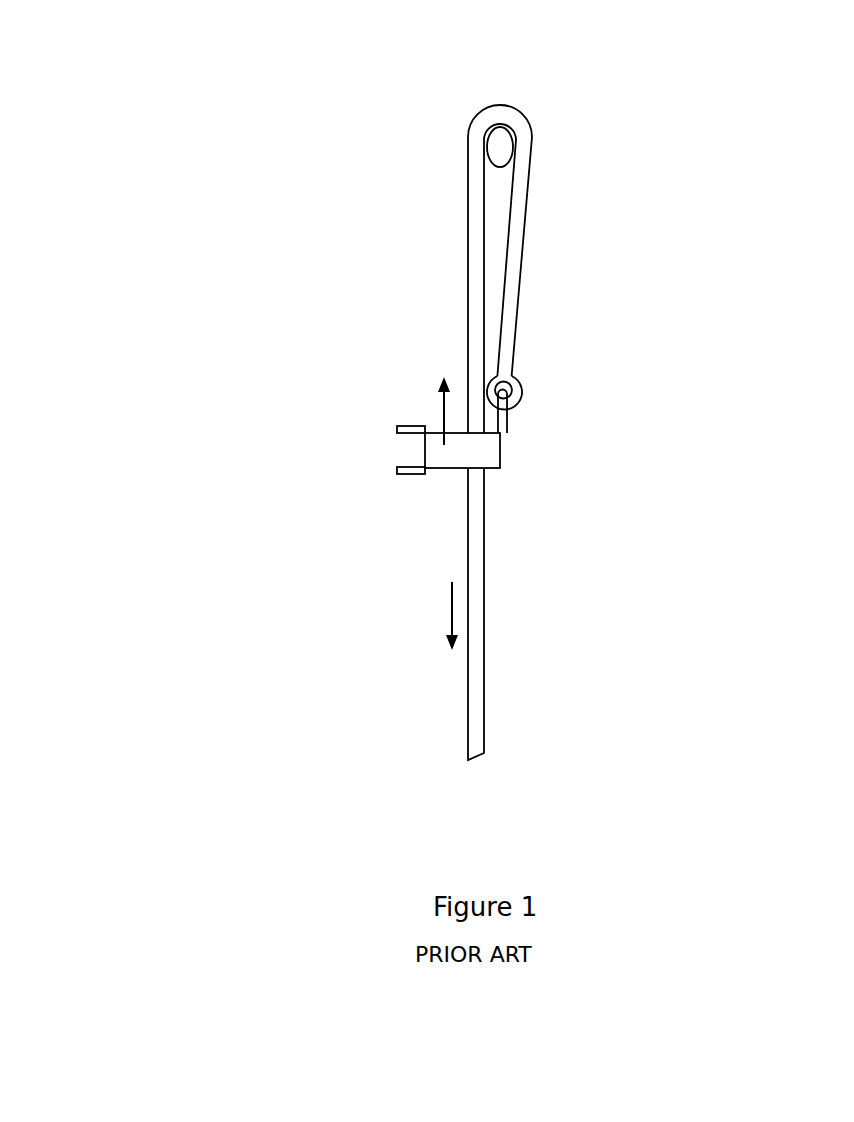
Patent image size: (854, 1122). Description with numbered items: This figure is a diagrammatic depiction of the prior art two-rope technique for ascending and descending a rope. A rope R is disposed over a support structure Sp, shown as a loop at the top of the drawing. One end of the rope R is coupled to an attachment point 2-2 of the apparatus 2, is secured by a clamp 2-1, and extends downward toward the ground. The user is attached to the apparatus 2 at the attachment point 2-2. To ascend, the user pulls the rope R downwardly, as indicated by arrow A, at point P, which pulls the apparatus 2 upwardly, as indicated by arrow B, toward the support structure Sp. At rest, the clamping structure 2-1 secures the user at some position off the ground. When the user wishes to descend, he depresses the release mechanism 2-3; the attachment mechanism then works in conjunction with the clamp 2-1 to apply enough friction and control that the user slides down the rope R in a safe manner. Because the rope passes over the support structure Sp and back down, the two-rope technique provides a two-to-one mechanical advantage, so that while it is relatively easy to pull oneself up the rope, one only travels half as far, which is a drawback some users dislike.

The apparatus 2 is at (118, 77).
The point P is at (470, 556).
The rope R is at (522, 170).
The support structure Sp is at (498, 146).
The clamp 2-1 is at (473, 456).
The attachment point 2-2 is at (505, 423).
The release mechanism 2-3 is at (397, 469).
The arrow A is at (439, 616).
The arrow B is at (427, 410).